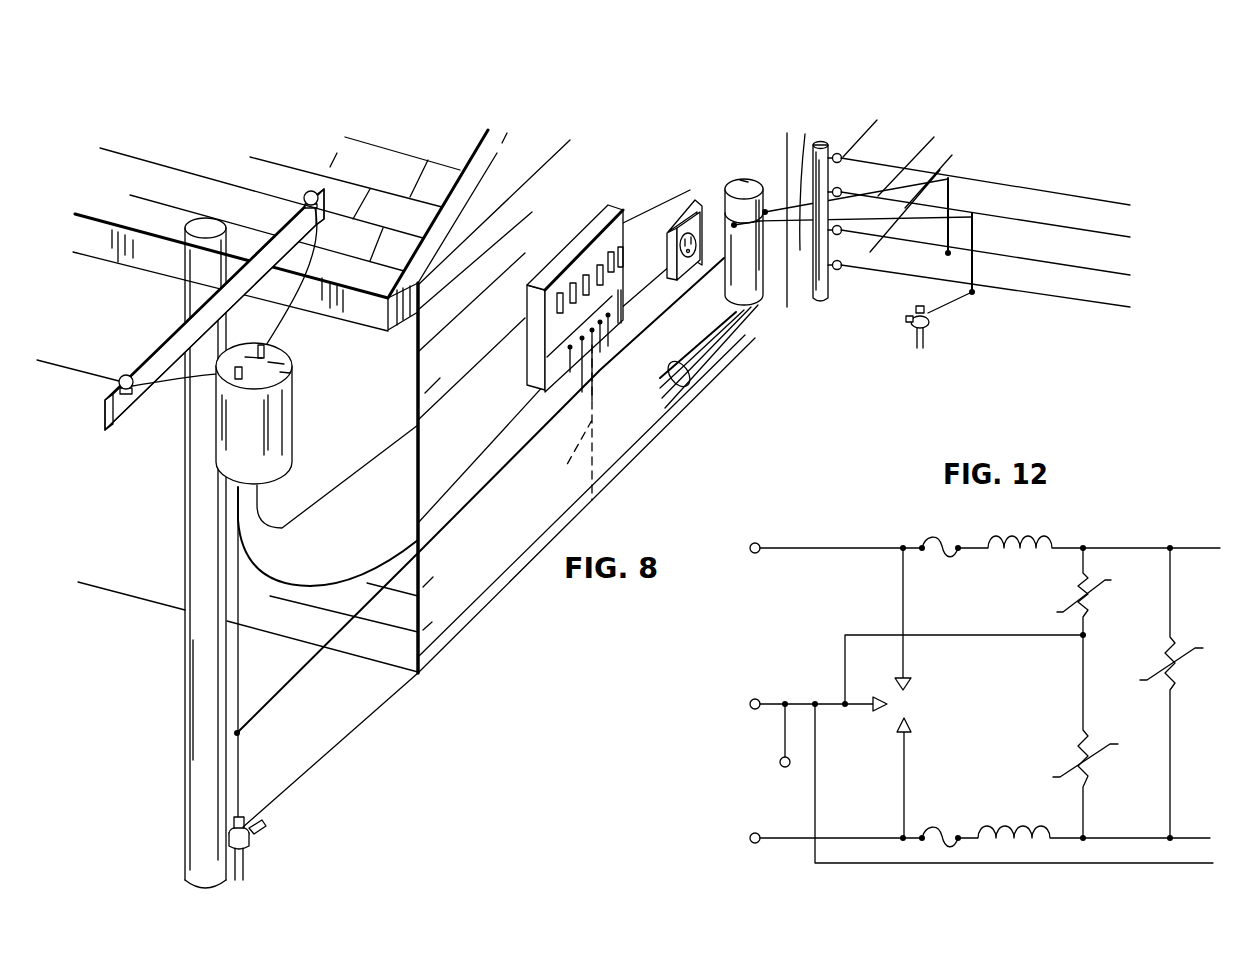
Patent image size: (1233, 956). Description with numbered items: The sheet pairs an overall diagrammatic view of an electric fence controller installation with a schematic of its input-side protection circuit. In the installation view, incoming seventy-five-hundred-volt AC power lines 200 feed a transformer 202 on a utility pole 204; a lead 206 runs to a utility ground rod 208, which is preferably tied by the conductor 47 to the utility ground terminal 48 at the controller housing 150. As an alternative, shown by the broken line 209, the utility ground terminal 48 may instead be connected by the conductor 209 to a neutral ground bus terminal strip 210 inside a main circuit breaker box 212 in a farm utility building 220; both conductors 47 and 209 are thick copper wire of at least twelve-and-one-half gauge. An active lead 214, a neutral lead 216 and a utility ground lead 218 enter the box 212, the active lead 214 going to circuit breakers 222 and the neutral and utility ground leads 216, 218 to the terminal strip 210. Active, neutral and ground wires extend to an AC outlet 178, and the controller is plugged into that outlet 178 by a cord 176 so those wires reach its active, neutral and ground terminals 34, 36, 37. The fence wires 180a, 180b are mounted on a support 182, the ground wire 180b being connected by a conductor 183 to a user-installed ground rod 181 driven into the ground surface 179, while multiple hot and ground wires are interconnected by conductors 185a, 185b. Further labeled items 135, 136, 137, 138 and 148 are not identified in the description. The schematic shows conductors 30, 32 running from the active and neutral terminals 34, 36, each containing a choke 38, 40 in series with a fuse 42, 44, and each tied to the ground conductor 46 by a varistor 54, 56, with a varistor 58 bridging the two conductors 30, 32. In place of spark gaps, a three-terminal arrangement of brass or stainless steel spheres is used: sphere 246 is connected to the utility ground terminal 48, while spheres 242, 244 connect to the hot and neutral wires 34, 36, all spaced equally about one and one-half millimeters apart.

In FIG. 8, the AC power lines 200 is at (172, 165).
In FIG. 8, the transformer 202 is at (292, 412).
In FIG. 8, the utility pole 204 is at (186, 641).
In FIG. 8, the lead 206 is at (238, 768).
In FIG. 8, the utility ground rod 208 is at (244, 858).
In FIG. 8, the conductor 209 is at (566, 422).
In FIG. 8, the neutral ground bus terminal strip 210 is at (567, 340).
In FIG. 8, the main circuit breaker box 212 is at (563, 258).
In FIG. 8, the active lead 214 is at (455, 385).
In FIG. 8, the neutral lead 216 is at (448, 493).
In FIG. 8, the utility ground lead 218 is at (477, 498).
In FIG. 8, the farm utility building 220 is at (503, 585).
In FIG. 8, the circuit breakers 222 is at (618, 232).
In FIG. 8, the conductor 47 is at (611, 471).
In FIG. 8, the electrical cord 176 is at (688, 382).
In FIG. 8, the AC outlet 178 is at (675, 228).
In FIG. 8, the housing 150 is at (741, 185).
In FIG. 8, the pole 135 is at (818, 145).
In FIG. 8, the lead 136 is at (766, 210).
In FIG. 8, the lead 137 is at (900, 205).
In FIG. 8, the lead 138 is at (733, 225).
In FIG. 8, the ground surface 179 is at (868, 437).
In FIG. 8, the fence wire 180a is at (1128, 210).
In FIG. 8, the ground wire 180b is at (1128, 244).
In FIG. 8, the ground rod 181 is at (917, 345).
In FIG. 8, the support 182 is at (828, 300).
In FIG. 8, the conductor 183 is at (947, 308).
In FIG. 8, the conductor 185a is at (975, 178).
In FIG. 8, the conductor 185b is at (973, 285).
In FIG. 8, the active terminal 34 is at (732, 312).
In FIG. 12, the active terminal 34 is at (835, 530).
In FIG. 8, the neutral terminal 36 is at (750, 306).
In FIG. 12, the neutral terminal 36 is at (757, 843).
In FIG. 8, the ground terminal 37 is at (754, 304).
In FIG. 12, the ground terminal 37 is at (787, 770).
In FIG. 8, the utility ground terminal 48 is at (761, 307).
In FIG. 12, the utility ground terminal 48 is at (810, 676).
In FIG. 12, the conductor 30 is at (1141, 546).
In FIG. 12, the conductor 32 is at (1123, 838).
In FIG. 12, the choke 38 is at (1020, 538).
In FIG. 12, the choke 40 is at (1017, 830).
In FIG. 12, the fuse 42 is at (942, 541).
In FIG. 12, the fuse 44 is at (947, 833).
In FIG. 12, the conductor 46 is at (975, 633).
In FIG. 12, the varistor 54 is at (1092, 602).
In FIG. 12, the varistor 56 is at (1089, 771).
In FIG. 12, the varistor 58 is at (1177, 674).
In FIG. 12, the ground line 148 is at (1052, 864).
In FIG. 12, the terminal 242 is at (910, 723).
In FIG. 12, the terminal 244 is at (912, 685).
In FIG. 12, the terminal 246 is at (878, 697).